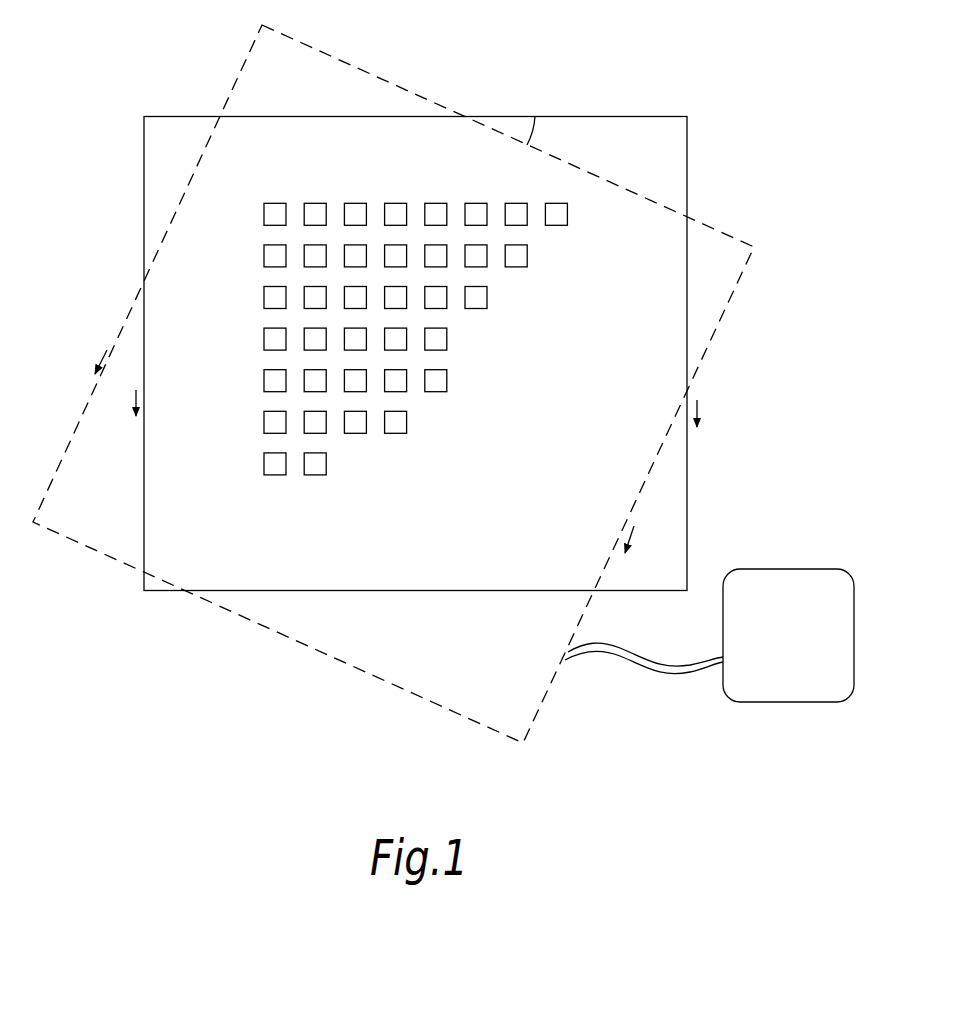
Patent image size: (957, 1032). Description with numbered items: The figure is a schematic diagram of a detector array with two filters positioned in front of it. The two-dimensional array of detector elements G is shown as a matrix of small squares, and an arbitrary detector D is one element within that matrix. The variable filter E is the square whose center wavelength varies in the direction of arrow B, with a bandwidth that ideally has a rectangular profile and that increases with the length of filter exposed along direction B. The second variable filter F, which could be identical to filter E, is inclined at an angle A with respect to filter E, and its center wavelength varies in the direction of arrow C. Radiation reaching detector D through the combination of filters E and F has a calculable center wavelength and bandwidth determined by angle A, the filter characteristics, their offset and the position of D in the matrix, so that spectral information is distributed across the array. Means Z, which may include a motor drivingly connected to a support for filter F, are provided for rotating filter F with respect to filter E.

The angle A is at (544, 133).
The arrow B is at (418, 408).
The arrow C is at (362, 453).
The detector D is at (396, 256).
The variable filter E is at (429, 354).
The second variable filter F is at (407, 384).
The two-dimensional array of detector elements G is at (355, 200).
The means for rotating filter F Z is at (709, 635).